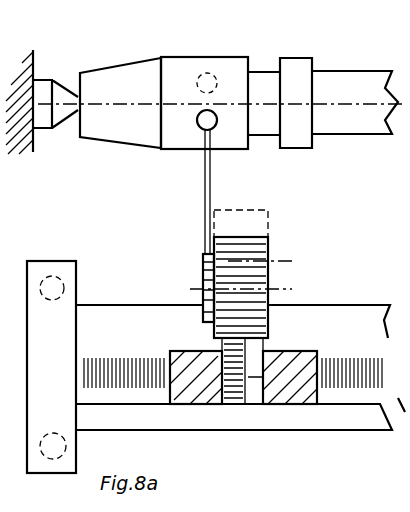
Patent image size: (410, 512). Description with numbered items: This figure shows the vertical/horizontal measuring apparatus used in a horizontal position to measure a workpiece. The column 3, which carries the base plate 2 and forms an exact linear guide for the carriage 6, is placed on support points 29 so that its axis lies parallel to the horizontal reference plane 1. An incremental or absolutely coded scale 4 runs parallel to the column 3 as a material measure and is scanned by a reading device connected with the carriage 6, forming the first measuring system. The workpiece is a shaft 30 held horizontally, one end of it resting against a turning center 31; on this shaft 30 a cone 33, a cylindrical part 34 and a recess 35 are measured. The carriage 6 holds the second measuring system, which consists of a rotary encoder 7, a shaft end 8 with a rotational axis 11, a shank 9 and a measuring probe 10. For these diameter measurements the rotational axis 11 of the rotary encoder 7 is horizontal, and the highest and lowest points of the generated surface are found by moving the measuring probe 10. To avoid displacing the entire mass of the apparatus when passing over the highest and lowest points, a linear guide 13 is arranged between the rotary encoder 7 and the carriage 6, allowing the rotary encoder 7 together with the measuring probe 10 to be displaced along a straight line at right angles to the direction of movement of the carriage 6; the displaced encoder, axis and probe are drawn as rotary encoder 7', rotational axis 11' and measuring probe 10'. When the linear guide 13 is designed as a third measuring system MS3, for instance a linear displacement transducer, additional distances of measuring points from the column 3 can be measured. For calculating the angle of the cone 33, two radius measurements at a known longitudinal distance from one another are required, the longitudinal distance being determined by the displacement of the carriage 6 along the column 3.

The reference plane 1 is at (78, 200).
The base plate 2 is at (63, 268).
The column 3 is at (365, 420).
The scale 4 is at (127, 358).
The carriage 6 is at (303, 395).
The rotary encoder 7 is at (267, 274).
The rotary encoder (displaced position) 7' is at (259, 210).
The shaft end 8 is at (203, 272).
The shank 9 is at (203, 178).
The measuring probe 10 is at (227, 148).
The measuring probe (displaced position) 10' is at (216, 51).
The rotational axis 11 is at (265, 278).
The rotational axis (displaced position) 11' is at (284, 249).
The linear guide 13 is at (255, 397).
The support points 29 is at (57, 292).
The shaft 30 is at (338, 72).
The turning center 31 is at (67, 83).
The cone 33 is at (122, 72).
The cylindrical part 34 is at (180, 63).
The recess 35 is at (265, 76).
The third measuring system MS3 is at (238, 412).